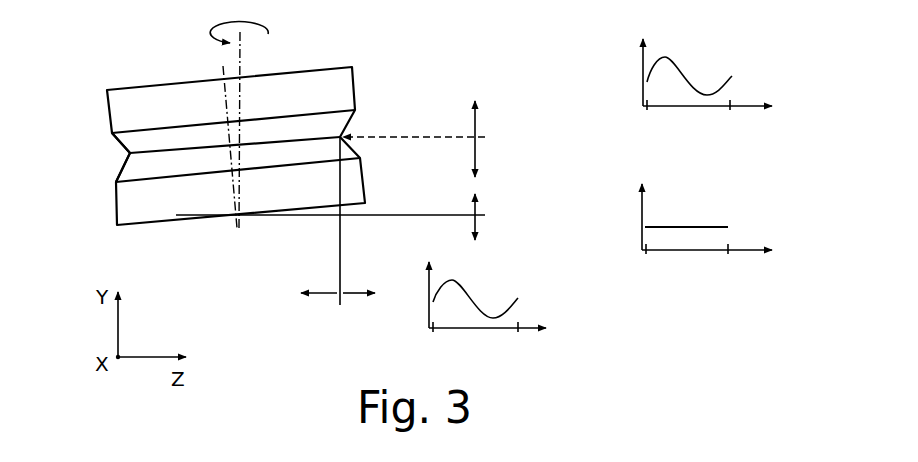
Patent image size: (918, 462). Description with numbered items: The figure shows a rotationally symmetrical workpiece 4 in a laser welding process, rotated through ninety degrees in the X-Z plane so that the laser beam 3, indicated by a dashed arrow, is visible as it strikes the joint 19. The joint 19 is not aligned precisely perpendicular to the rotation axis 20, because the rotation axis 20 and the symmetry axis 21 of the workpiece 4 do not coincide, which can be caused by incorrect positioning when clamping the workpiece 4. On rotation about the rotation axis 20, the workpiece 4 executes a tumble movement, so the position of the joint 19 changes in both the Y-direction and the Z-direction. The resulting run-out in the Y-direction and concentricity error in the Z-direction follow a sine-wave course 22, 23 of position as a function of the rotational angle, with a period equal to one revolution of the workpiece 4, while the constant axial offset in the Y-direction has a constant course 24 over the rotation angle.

The laser beam 3 is at (407, 136).
The workpiece 4 is at (96, 100).
The joint 19 is at (147, 155).
The rotation axis 20 is at (240, 62).
The symmetry axis 21 is at (226, 98).
The sine-wave course 22 is at (678, 65).
The sine-wave course 23 is at (470, 293).
The constant course 24 is at (685, 225).